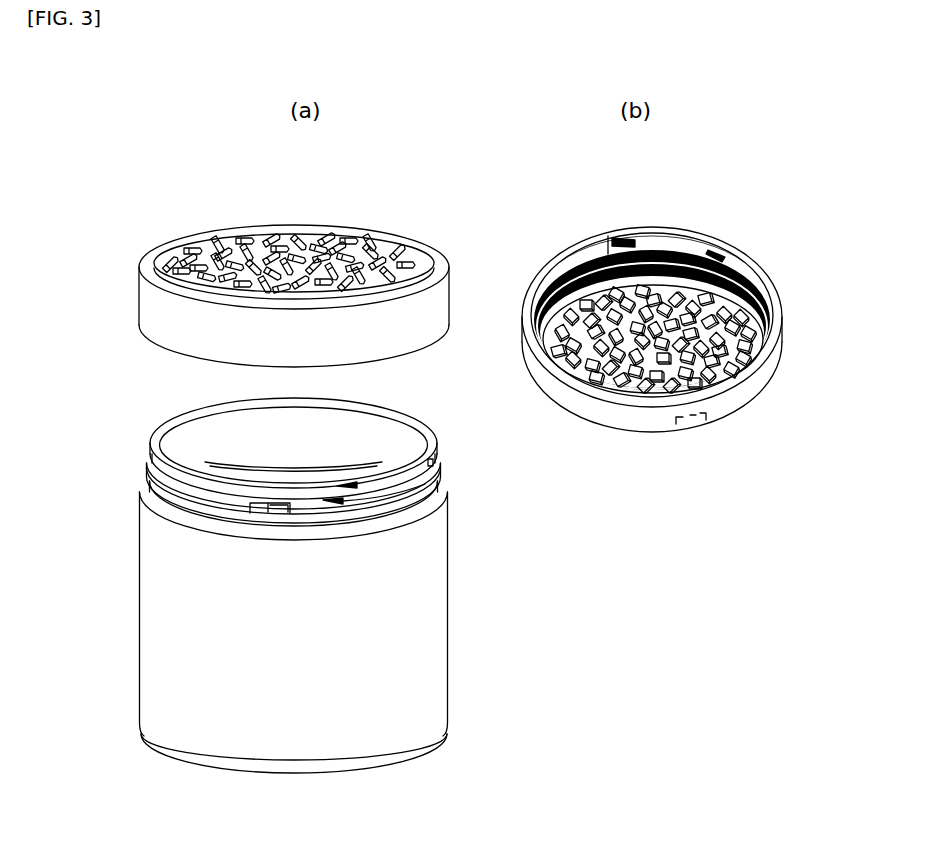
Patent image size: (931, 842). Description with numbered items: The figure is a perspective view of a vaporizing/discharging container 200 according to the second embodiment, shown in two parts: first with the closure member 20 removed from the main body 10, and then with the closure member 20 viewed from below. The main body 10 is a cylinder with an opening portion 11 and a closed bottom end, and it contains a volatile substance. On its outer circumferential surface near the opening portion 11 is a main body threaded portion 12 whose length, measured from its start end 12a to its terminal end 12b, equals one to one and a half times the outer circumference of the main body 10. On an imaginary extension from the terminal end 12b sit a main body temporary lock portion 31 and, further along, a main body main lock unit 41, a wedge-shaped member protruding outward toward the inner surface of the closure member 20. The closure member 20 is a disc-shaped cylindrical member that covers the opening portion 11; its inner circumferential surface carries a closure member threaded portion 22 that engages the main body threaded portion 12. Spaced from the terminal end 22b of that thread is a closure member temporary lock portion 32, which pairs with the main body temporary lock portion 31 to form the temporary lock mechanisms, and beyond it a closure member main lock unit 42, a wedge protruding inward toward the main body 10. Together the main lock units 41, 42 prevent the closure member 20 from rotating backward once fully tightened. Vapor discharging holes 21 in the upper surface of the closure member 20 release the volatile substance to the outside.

The vaporizing/discharging container 200 is at (140, 205).
The main body 10 is at (170, 645).
The opening portion 11 is at (218, 443).
The main body threaded portion 12 is at (445, 497).
The start end 12a is at (343, 487).
The terminal end 12b is at (340, 500).
The closure member 20 is at (162, 325).
The vapor discharging holes 21 is at (283, 226).
The closure member threaded portion 22 is at (683, 252).
The terminal end 22b is at (713, 257).
The main body temporary lock portion 31 is at (260, 510).
The closure member temporary lock portion 32 is at (625, 242).
The main body main lock unit 41 is at (437, 462).
The closure member main lock unit 42 is at (702, 428).